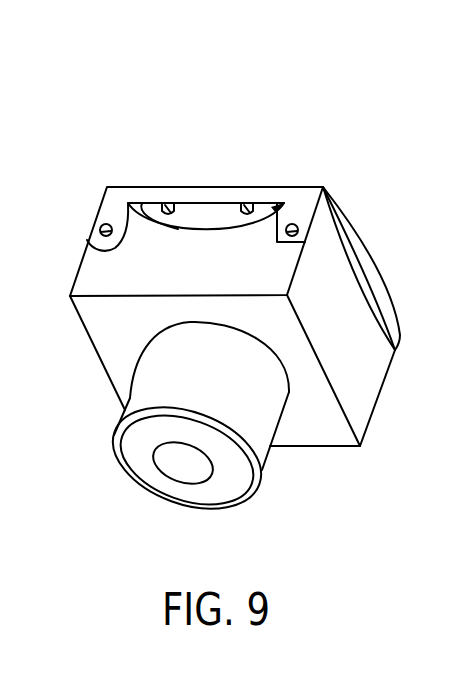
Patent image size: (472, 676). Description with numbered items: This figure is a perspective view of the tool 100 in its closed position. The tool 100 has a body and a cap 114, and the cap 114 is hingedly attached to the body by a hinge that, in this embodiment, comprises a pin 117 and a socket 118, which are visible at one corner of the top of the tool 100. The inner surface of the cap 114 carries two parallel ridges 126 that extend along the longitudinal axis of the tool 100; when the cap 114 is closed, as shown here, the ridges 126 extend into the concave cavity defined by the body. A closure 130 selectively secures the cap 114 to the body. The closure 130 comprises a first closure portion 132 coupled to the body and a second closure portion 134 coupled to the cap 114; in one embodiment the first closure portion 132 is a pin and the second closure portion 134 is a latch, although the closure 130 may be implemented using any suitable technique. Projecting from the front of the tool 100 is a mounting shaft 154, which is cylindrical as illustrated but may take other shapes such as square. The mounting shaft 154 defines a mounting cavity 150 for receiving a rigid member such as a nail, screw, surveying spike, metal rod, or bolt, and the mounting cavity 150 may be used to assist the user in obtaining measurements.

The tool 100 is at (335, 83).
The cap 114 is at (228, 164).
The pin 117 is at (100, 227).
The socket 118 is at (97, 241).
The ridge 126 is at (168, 205).
The closure 130 is at (322, 242).
The first closure portion 132 is at (300, 218).
The second closure portion 134 is at (299, 230).
The mounting cavity 150 is at (184, 456).
The mounting shaft 154 is at (258, 425).